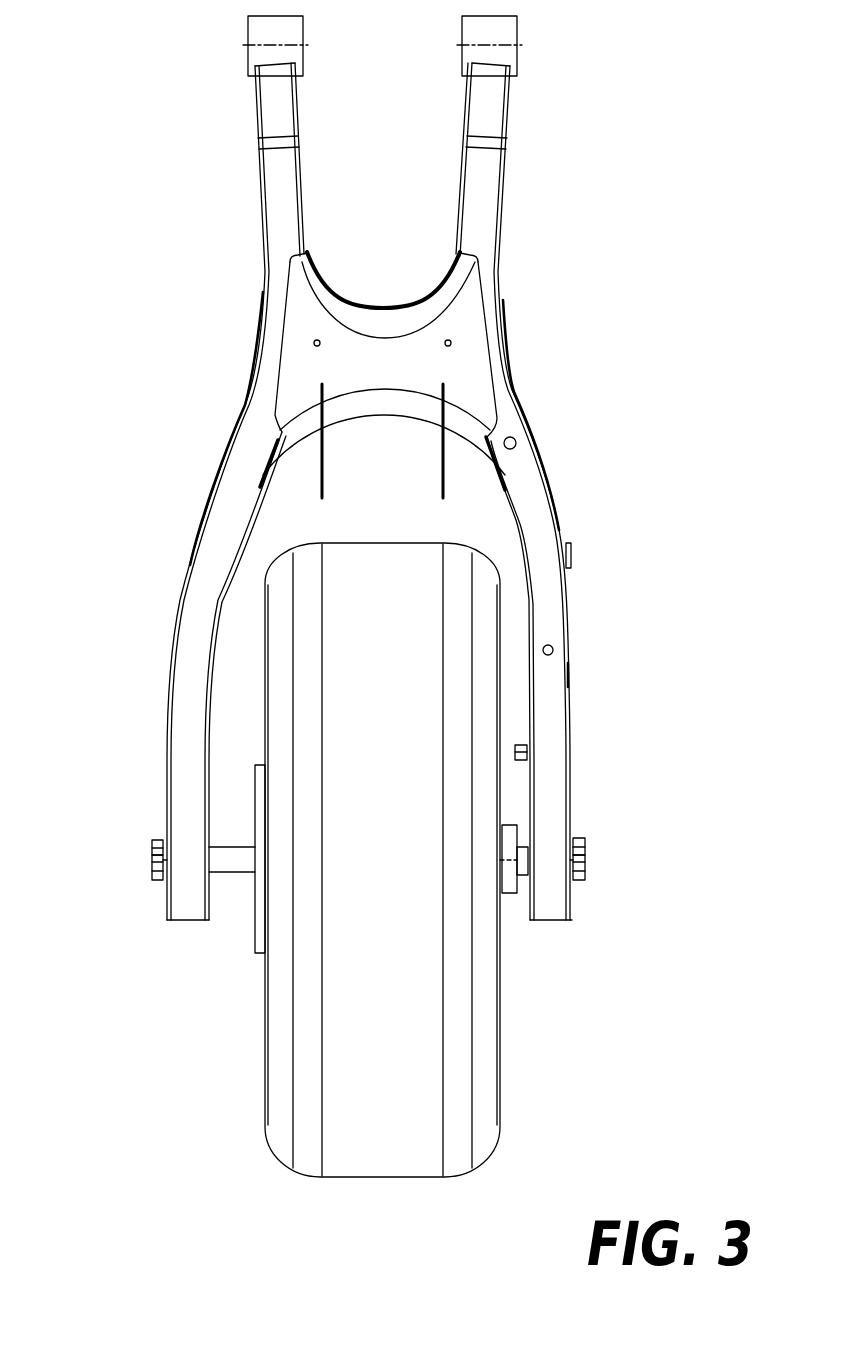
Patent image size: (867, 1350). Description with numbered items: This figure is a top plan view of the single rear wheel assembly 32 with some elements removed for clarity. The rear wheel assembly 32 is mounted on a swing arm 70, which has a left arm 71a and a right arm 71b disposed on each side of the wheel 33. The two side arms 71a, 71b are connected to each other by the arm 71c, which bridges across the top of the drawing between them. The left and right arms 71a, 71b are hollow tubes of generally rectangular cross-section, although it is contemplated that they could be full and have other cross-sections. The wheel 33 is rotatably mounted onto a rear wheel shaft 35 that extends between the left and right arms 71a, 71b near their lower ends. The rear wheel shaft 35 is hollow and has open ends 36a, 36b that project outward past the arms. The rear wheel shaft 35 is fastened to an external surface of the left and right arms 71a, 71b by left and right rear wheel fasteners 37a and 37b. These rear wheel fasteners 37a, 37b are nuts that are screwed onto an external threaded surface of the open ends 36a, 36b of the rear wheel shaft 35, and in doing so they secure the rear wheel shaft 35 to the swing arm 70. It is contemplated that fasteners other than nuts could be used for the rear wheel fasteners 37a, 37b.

The rear wheel assembly 32 is at (612, 548).
The wheel 33 is at (406, 911).
The rear wheel shaft 35 is at (228, 858).
The open end 36a is at (150, 860).
The open end 36b is at (587, 863).
The left rear wheel fastener 37a is at (160, 838).
The right rear wheel fastener 37b is at (580, 838).
The swing arm 70 is at (488, 242).
The left arm 71a is at (207, 527).
The right arm 71b is at (567, 777).
The arm 71c is at (310, 335).